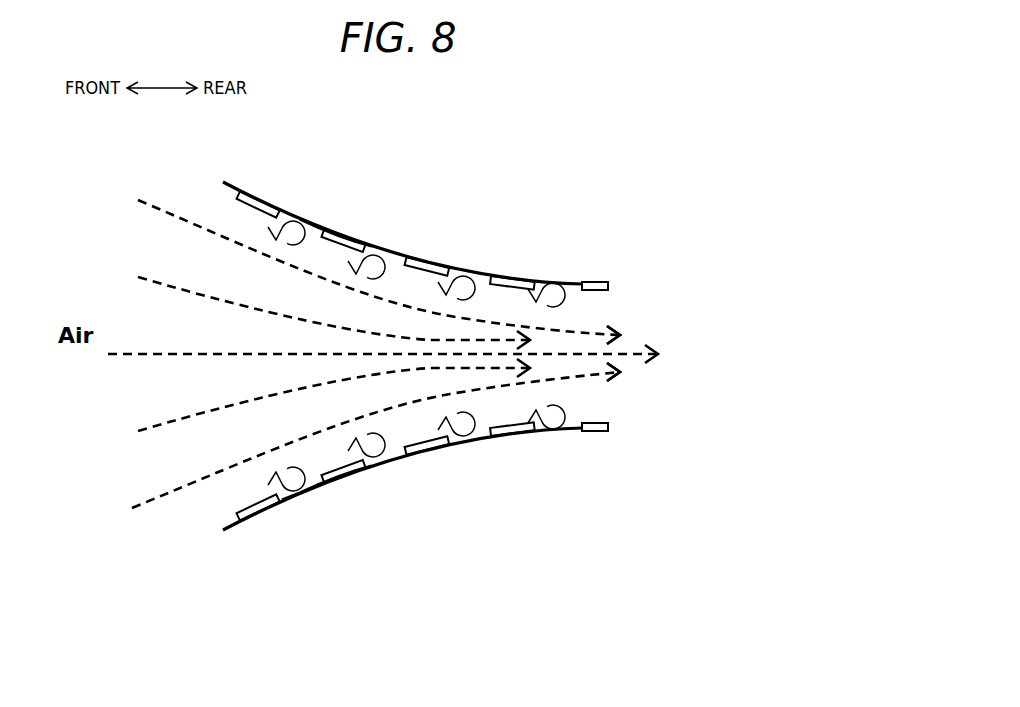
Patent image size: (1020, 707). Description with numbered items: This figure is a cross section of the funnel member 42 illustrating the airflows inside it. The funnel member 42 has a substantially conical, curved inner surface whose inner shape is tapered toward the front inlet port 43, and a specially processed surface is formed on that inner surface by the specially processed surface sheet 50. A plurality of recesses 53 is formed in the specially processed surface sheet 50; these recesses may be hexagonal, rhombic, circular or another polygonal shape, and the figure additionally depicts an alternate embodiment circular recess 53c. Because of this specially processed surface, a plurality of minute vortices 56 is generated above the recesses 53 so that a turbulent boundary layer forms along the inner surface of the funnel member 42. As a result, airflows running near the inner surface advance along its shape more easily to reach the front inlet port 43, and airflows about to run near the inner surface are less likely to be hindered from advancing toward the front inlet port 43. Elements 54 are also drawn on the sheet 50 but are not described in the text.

The specially processed surface sheet 50 is at (615, 283).
The funnel member 42 is at (402, 233).
The front inlet port 43 is at (622, 387).
The recess 53 is at (378, 247).
The circular recess 53c is at (292, 500).
The fin 54 is at (342, 235).
The minute vortex 56 is at (308, 220).